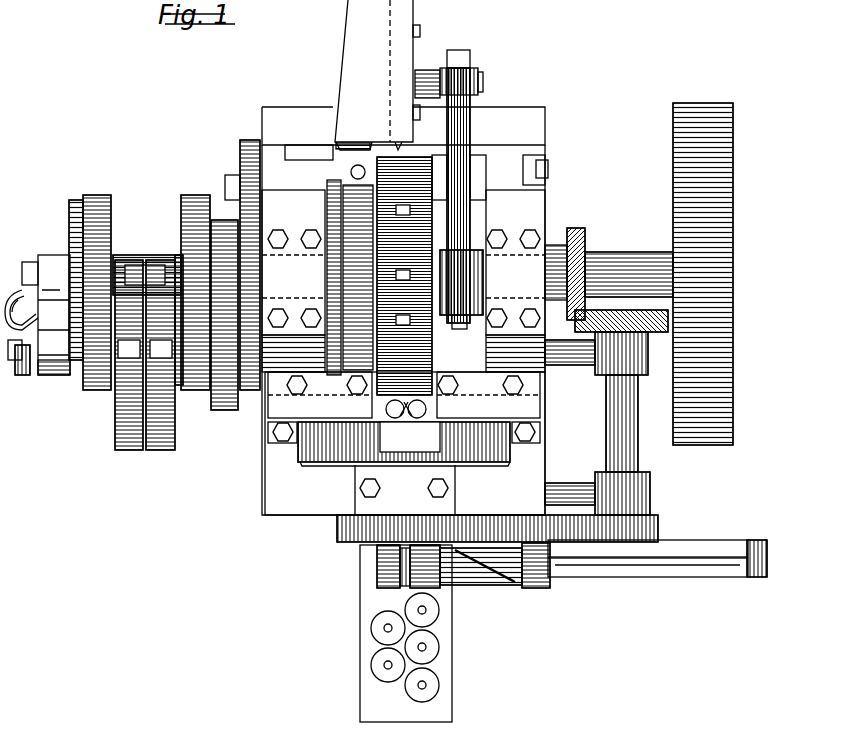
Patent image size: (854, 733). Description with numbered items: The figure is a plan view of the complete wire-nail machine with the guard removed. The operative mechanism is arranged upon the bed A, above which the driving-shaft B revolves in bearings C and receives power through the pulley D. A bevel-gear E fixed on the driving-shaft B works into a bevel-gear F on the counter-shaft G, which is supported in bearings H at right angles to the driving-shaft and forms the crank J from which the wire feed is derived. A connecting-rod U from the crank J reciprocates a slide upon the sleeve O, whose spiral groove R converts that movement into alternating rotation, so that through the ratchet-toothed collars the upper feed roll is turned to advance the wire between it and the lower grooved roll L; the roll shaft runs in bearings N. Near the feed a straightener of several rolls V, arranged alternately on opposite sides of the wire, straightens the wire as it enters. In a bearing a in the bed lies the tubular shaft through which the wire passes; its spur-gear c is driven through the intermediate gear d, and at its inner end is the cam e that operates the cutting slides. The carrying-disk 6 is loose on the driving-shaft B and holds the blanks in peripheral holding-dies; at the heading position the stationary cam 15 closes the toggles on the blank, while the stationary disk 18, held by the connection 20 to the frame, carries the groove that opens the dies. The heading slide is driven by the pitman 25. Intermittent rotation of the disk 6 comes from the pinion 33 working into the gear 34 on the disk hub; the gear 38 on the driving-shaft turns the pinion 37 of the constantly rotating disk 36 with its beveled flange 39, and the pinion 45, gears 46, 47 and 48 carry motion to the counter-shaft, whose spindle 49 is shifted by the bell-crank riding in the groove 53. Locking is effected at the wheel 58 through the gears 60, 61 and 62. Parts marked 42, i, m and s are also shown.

The disk 6 is at (404, 276).
The stationary cam 15 is at (439, 177).
The stationary disk 18 is at (365, 172).
The connection 20 is at (478, 195).
The pitman 25 is at (471, 135).
The pinion 33 is at (377, 77).
The gear 34 is at (327, 200).
The concentric disk 36 is at (129, 355).
The pinion 37 is at (51, 327).
The gear 38 is at (97, 285).
The concentric flange 39 is at (337, 277).
The gear 42 is at (160, 355).
The pinion 45 is at (186, 328).
The gear 46 is at (195, 285).
The gear 47 is at (224, 308).
The gear 48 is at (224, 423).
The spindle 49 is at (8, 365).
The groove 53 is at (68, 280).
The rotating wheel 58 is at (327, 213).
The gear 60 is at (273, 270).
The gear 61 is at (242, 258).
The gear 62 is at (259, 140).
The bed A is at (405, 443).
The driving-shaft B is at (393, 267).
The bearings C is at (403, 262).
The pulley D is at (703, 274).
The bevel-gear E is at (578, 266).
The bevel-gear F is at (621, 329).
The counter-shaft G is at (629, 423).
The bearings H is at (622, 423).
The crank J is at (661, 529).
The grooved roll L is at (396, 593).
The bearings N is at (408, 566).
The sleeve O is at (481, 572).
The spiral groove R is at (490, 580).
The connecting-rod U is at (657, 550).
The rolls V is at (405, 647).
The bearing a is at (405, 484).
The spur-gear c is at (491, 528).
The gear d is at (544, 527).
The cam e is at (404, 444).
The pinion i is at (413, 409).
The pinion m is at (395, 409).
The bearing s is at (536, 571).